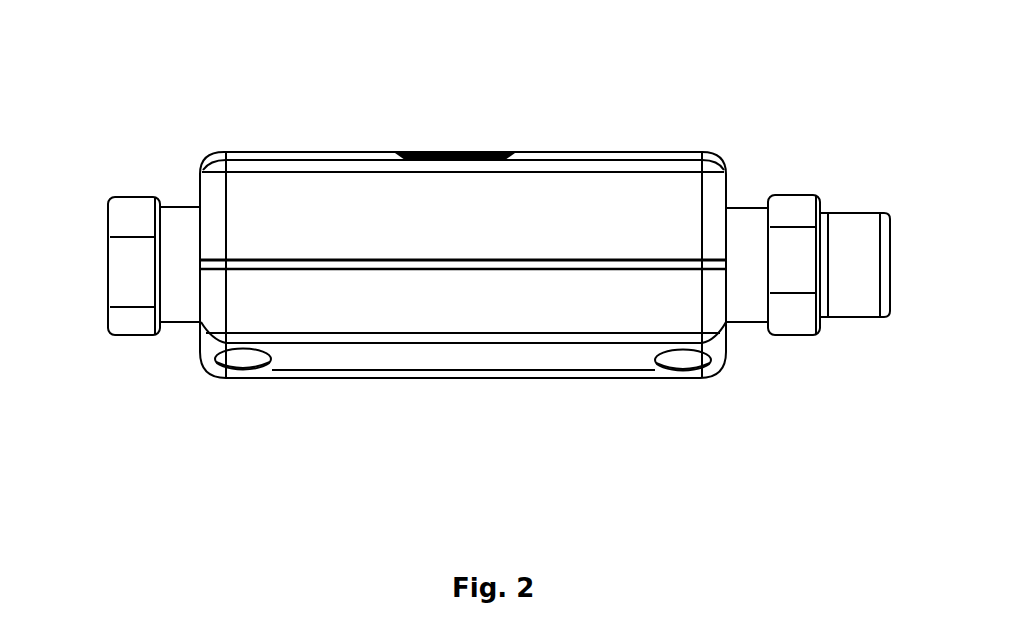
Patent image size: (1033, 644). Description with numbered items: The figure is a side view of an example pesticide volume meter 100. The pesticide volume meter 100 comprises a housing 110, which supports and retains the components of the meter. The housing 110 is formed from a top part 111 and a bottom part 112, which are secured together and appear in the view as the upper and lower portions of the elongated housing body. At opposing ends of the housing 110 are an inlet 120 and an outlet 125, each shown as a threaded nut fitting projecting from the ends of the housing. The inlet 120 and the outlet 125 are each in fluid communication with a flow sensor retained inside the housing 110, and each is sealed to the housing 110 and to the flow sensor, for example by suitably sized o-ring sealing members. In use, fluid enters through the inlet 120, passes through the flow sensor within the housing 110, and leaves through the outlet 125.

The pesticide volume meter 100 is at (640, 64).
The housing 110 is at (553, 152).
The top part 111 is at (607, 212).
The bottom part 112 is at (467, 302).
The inlet 120 is at (138, 197).
The outlet 125 is at (790, 195).